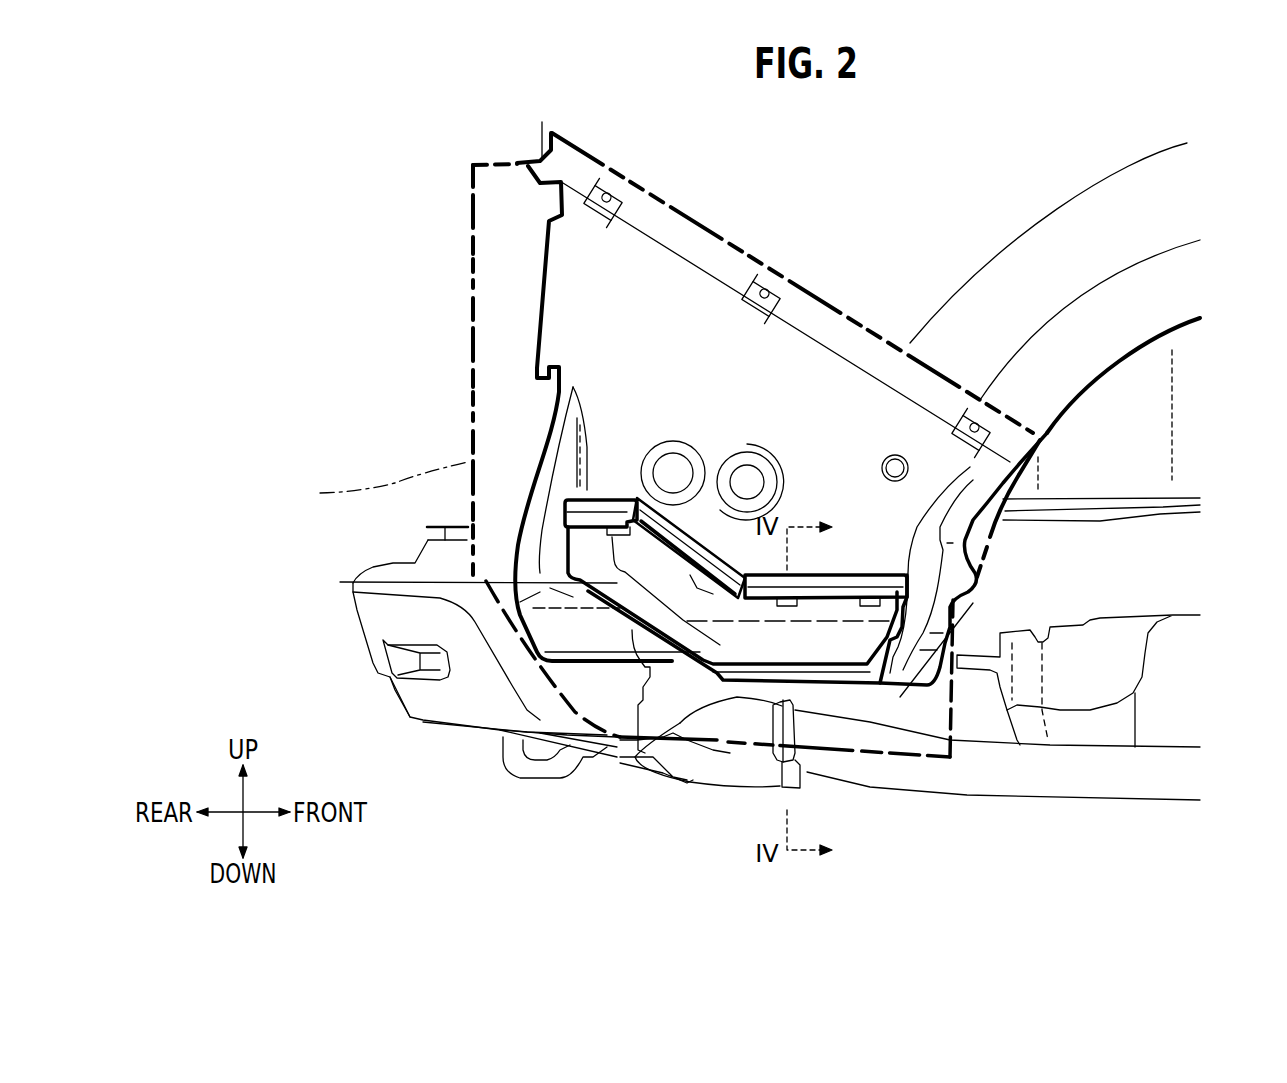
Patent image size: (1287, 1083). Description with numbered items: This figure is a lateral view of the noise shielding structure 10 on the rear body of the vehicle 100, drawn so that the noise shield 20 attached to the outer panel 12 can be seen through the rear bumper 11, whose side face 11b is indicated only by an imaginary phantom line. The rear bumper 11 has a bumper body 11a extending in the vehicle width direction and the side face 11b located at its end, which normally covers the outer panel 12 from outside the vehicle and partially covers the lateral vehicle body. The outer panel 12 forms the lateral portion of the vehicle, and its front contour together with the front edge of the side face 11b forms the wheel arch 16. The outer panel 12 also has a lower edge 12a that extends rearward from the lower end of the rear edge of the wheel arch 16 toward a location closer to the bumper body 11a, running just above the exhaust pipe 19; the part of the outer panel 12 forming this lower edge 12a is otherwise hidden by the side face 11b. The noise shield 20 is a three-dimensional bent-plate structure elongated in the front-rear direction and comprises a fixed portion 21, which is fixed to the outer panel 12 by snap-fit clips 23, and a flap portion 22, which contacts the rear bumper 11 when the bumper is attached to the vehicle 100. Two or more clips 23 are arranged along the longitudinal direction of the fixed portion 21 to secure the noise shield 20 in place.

The vehicle 100 is at (1112, 197).
The noise shielding structure 10 is at (875, 290).
The wheel arch 16 is at (1080, 403).
The outer panel 12 is at (540, 287).
The lower edge 12a is at (972, 615).
The rear bumper 11 is at (267, 472).
The bumper body 11a is at (393, 563).
The side face 11b is at (364, 484).
The clip 23 is at (340, 582).
The noise shield 20 is at (655, 708).
The fixed portion 21 is at (680, 540).
The flap portion 22 is at (642, 532).
The exhaust pipe 19 is at (957, 777).